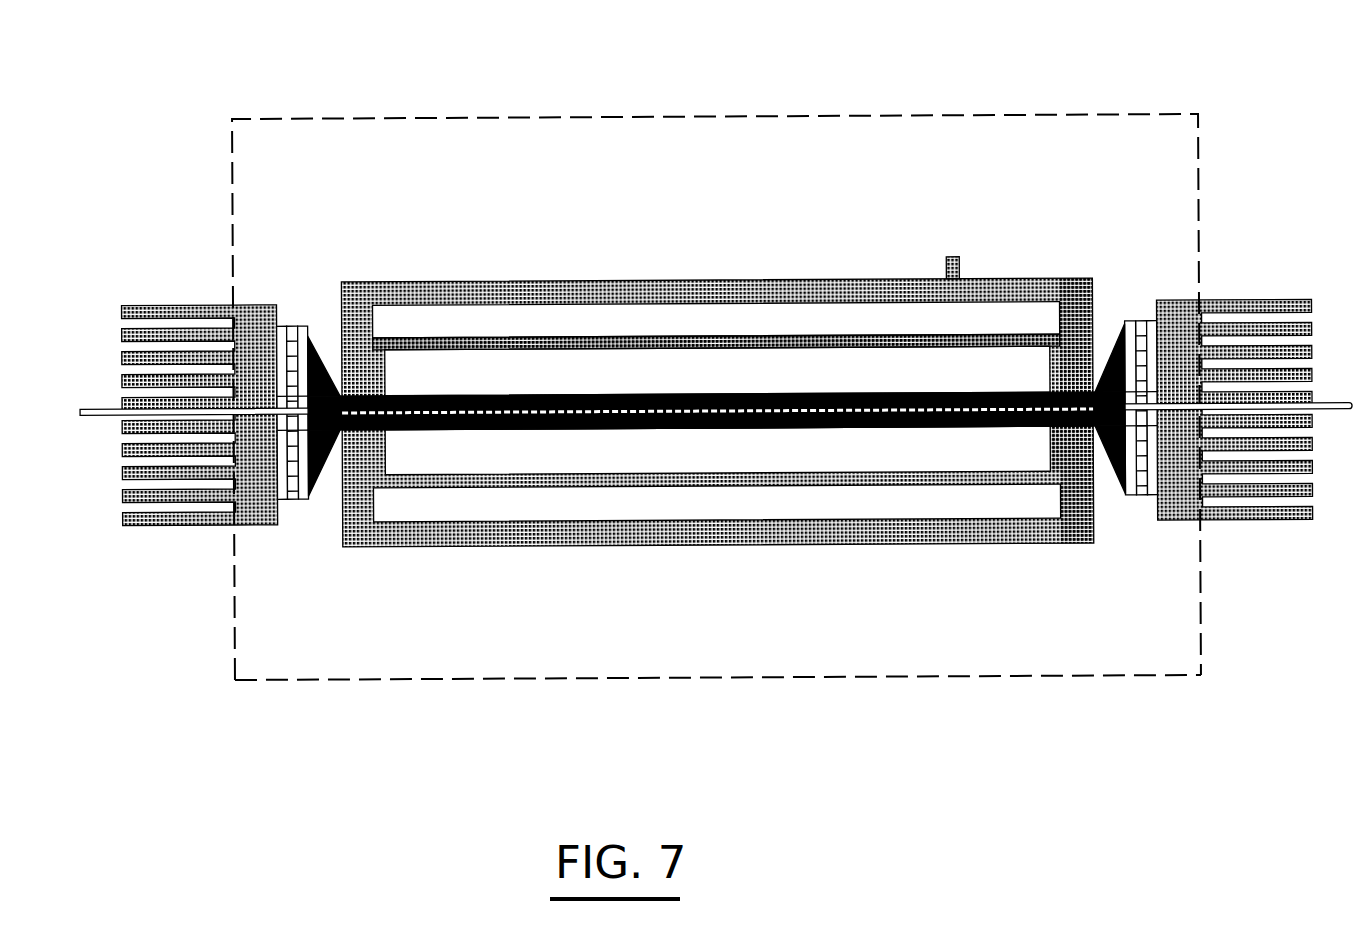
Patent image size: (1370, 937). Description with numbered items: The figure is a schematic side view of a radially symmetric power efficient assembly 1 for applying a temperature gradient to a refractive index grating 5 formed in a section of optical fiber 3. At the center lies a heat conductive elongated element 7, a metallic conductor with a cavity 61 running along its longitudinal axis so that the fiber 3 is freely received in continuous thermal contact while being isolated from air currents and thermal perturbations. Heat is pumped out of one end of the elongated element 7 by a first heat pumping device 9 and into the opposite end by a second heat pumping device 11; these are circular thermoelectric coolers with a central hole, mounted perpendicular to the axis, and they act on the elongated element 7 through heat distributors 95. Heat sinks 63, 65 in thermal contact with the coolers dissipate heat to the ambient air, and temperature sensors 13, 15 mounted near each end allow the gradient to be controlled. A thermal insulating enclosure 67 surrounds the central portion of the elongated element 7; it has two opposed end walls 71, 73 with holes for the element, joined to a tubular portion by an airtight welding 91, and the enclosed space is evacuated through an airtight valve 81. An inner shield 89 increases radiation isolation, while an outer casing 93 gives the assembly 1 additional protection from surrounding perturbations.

The power efficient assembly 1 is at (701, 376).
The optical fiber 3 is at (84, 409).
The refractive index grating 5 is at (722, 393).
The heat conductive elongated element 7 is at (453, 392).
The first heat pumping device 9 is at (300, 326).
The second heat pumping device 11 is at (1147, 322).
The temperature sensor 13 is at (336, 470).
The temperature sensor 15 is at (1102, 462).
The cavity 61 is at (402, 429).
The heat sink 63 is at (242, 527).
The heat sink 65 is at (1192, 510).
The thermal insulating enclosure 67 is at (670, 142).
The end wall 71 is at (378, 312).
The end wall 73 is at (1064, 318).
The airtight valve 81 is at (945, 267).
The inner shield 89 is at (950, 347).
The airtight welding 91 is at (1057, 440).
The outer casing 93 is at (962, 678).
The heat distributor 95 is at (322, 347).